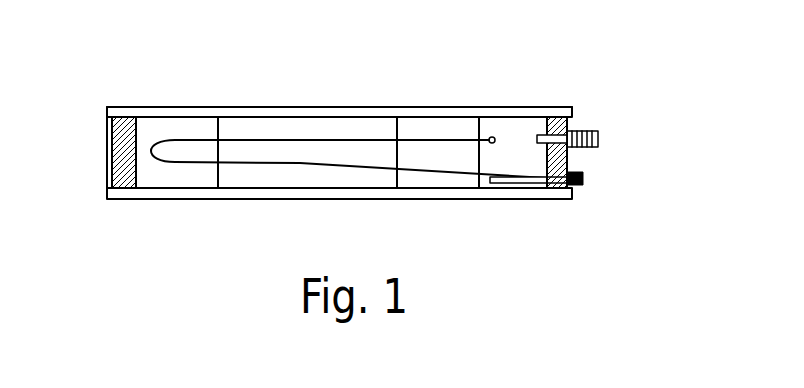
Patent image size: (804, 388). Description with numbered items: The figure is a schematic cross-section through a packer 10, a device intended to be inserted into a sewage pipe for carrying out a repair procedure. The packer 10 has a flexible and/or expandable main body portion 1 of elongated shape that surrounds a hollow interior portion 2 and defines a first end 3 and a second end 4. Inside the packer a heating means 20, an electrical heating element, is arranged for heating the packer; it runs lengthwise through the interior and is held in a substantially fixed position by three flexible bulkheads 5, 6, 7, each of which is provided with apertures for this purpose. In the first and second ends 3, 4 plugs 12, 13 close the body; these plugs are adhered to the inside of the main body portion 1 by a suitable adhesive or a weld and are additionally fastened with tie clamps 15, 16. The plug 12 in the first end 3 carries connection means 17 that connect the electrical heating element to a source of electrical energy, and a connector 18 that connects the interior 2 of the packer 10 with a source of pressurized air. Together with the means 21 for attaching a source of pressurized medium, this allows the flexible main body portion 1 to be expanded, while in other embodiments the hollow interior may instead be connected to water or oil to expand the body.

The main body portion 1 is at (455, 106).
The hollow interior portion 2 is at (323, 180).
The first end 3 is at (565, 107).
The second end 4 is at (102, 143).
The flexible bulkhead 5 is at (216, 118).
The flexible bulkhead 6 is at (393, 118).
The flexible bulkhead 7 is at (482, 123).
The packer 10 is at (422, 80).
The plug 12 is at (566, 155).
The plug 13 is at (120, 168).
The tie clamp 15 is at (560, 199).
The tie clamp 16 is at (118, 106).
The connection means 17 is at (583, 180).
The connector 18 is at (587, 128).
The heating means 20 is at (513, 180).
The means for attaching a source of pressurized medium 21 is at (598, 138).